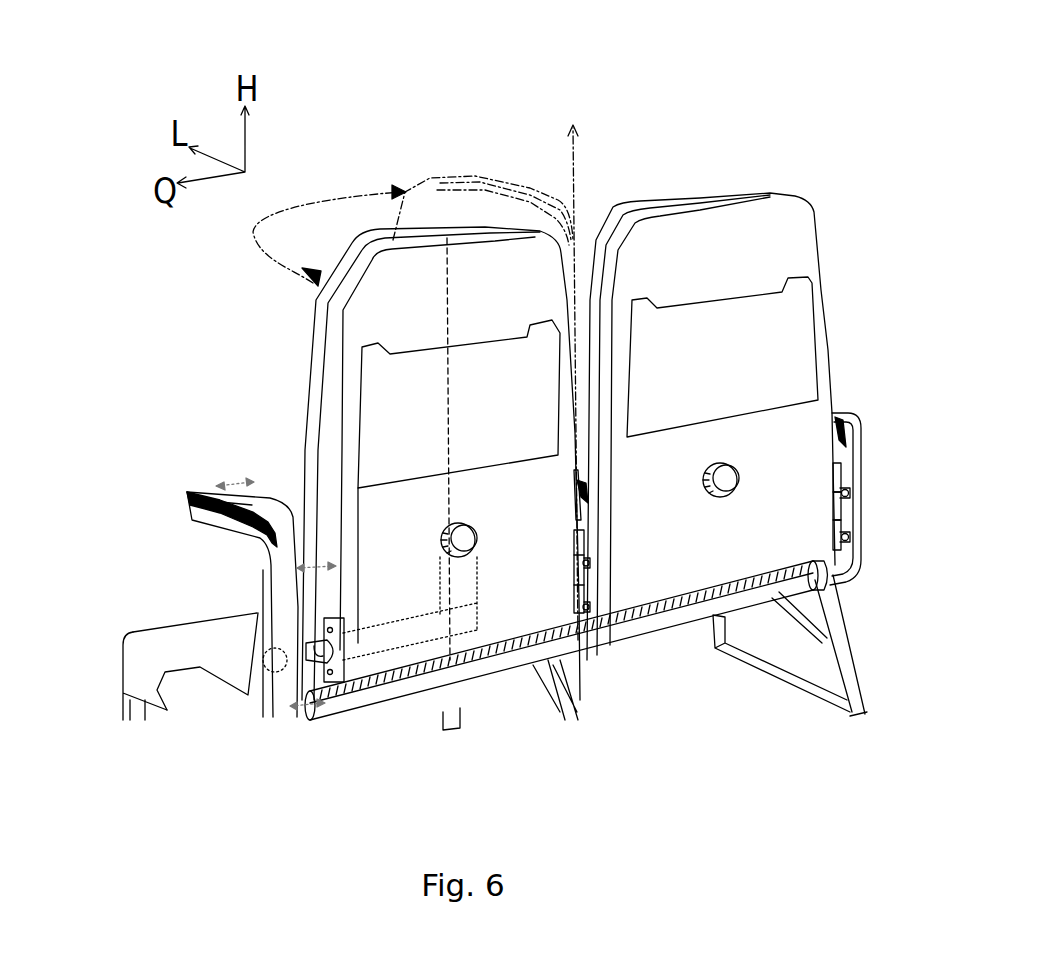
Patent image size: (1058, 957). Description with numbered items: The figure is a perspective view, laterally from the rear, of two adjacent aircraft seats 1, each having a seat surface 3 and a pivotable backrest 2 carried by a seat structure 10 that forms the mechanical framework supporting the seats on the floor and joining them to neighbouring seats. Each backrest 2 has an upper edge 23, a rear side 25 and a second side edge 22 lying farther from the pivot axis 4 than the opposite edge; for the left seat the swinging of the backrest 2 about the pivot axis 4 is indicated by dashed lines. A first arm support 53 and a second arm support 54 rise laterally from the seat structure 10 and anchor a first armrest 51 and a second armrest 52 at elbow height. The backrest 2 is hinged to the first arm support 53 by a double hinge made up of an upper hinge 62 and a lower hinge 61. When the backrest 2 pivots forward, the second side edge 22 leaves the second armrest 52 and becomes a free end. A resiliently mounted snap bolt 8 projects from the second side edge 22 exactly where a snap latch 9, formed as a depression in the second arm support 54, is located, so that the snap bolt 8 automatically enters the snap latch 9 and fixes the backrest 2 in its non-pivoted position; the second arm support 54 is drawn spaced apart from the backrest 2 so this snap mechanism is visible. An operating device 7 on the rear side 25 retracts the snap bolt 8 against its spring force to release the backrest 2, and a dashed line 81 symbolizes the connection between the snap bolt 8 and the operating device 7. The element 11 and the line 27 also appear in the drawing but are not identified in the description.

The seat 1 is at (388, 168).
The backrest 2 is at (400, 307).
The seat surface 3 is at (195, 637).
The pivot axis 4 is at (574, 167).
The operating device 7 is at (727, 477).
The snap bolt 8 is at (262, 663).
The snap latch 9 is at (257, 667).
The seat structure 10 is at (843, 650).
The cross tube 11 is at (793, 577).
The second side edge 22 is at (330, 470).
The upper edge 23 is at (713, 208).
The rear side 25 is at (793, 228).
The median plane of seat back 27 is at (447, 270).
The first armrest 51 is at (581, 480).
The second armrest 52 is at (252, 500).
The first arm support 53 is at (595, 565).
The second arm support 54 is at (284, 603).
The lower hinge 61 is at (847, 540).
The upper hinge 62 is at (847, 495).
The dashed line 81 is at (432, 637).